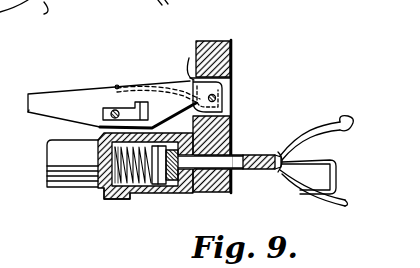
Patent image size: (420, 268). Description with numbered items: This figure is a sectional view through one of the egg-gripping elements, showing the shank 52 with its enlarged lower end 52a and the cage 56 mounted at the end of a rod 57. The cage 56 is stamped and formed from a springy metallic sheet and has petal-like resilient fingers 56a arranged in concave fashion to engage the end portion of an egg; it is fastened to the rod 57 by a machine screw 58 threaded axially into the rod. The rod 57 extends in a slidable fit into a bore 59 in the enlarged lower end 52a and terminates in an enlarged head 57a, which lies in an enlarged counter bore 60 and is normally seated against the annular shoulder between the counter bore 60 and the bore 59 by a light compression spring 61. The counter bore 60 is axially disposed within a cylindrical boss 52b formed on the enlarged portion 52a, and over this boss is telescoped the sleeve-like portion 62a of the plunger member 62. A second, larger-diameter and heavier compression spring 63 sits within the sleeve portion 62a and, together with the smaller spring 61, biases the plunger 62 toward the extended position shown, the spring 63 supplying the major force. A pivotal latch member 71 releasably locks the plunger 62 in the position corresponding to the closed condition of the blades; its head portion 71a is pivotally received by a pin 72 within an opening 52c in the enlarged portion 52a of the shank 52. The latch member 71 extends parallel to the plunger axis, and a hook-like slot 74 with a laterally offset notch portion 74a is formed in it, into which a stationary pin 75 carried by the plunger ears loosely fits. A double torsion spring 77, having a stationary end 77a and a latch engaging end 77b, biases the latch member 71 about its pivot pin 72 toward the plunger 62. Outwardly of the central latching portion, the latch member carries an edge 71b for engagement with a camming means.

The shank 52 is at (215, 40).
The enlarged lower end 52a is at (265, 171).
The cylindrical boss 52b is at (195, 190).
The opening 52c is at (232, 60).
The cage 56 is at (289, 124).
The petal-like resilient fingers 56a is at (345, 124).
The rod 57 is at (247, 155).
The enlarged head 57a is at (180, 196).
The machine screw 58 is at (287, 173).
The bore 59 is at (233, 121).
The counter bore 60 is at (141, 195).
The light compression spring 61 is at (169, 149).
The plunger member 62 is at (60, 190).
The sleeve-like portion 62a is at (134, 201).
The compression spring 63 is at (104, 196).
The pivotal latch member 71 is at (50, 94).
The head portion 71a is at (224, 82).
The edge 71b is at (40, 113).
The pin 72 is at (216, 98).
The hook-like slot 74 is at (105, 108).
The laterally offset notch portion 74a is at (150, 111).
The stationary pin 75 is at (88, 126).
The double torsion spring 77 is at (172, 72).
The stationary end 77a is at (189, 58).
The latch engaging end 77b is at (116, 85).